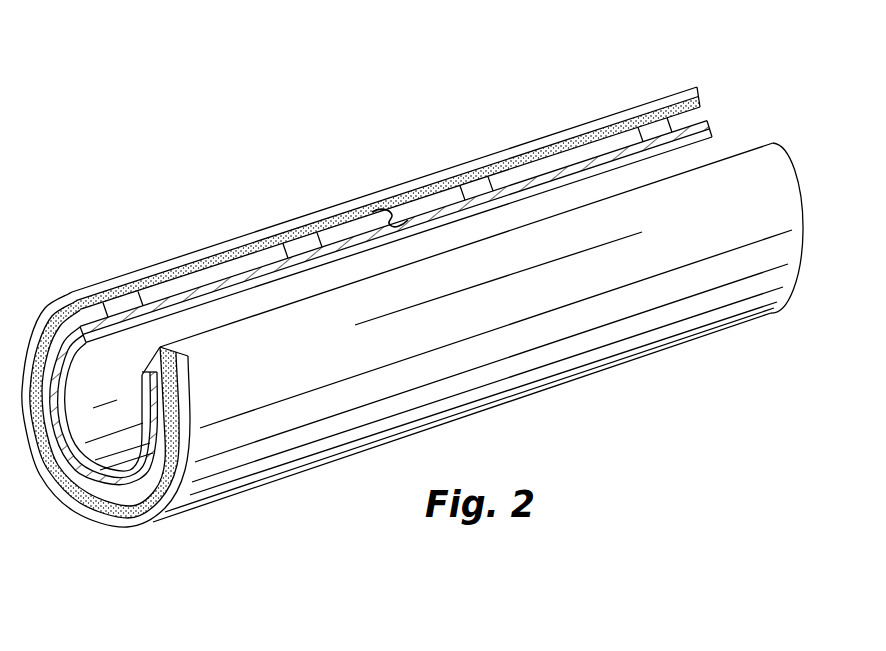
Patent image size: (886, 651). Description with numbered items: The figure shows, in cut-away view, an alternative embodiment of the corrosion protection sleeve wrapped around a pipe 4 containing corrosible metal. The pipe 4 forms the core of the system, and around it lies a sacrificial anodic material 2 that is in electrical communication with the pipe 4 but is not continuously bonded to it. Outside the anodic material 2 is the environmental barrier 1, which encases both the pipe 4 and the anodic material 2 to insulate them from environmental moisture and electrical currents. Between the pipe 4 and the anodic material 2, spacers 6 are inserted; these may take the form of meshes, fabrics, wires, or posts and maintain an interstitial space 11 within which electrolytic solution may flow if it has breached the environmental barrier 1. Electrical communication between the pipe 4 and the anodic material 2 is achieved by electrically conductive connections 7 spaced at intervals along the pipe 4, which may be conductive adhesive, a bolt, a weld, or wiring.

The environmental barrier 1 is at (698, 91).
The anodic material 2 is at (107, 297).
The pipe 4 is at (130, 478).
The spacers 6 is at (480, 186).
The electrically conductive connections 7 is at (395, 212).
The interstitial space 11 is at (117, 496).